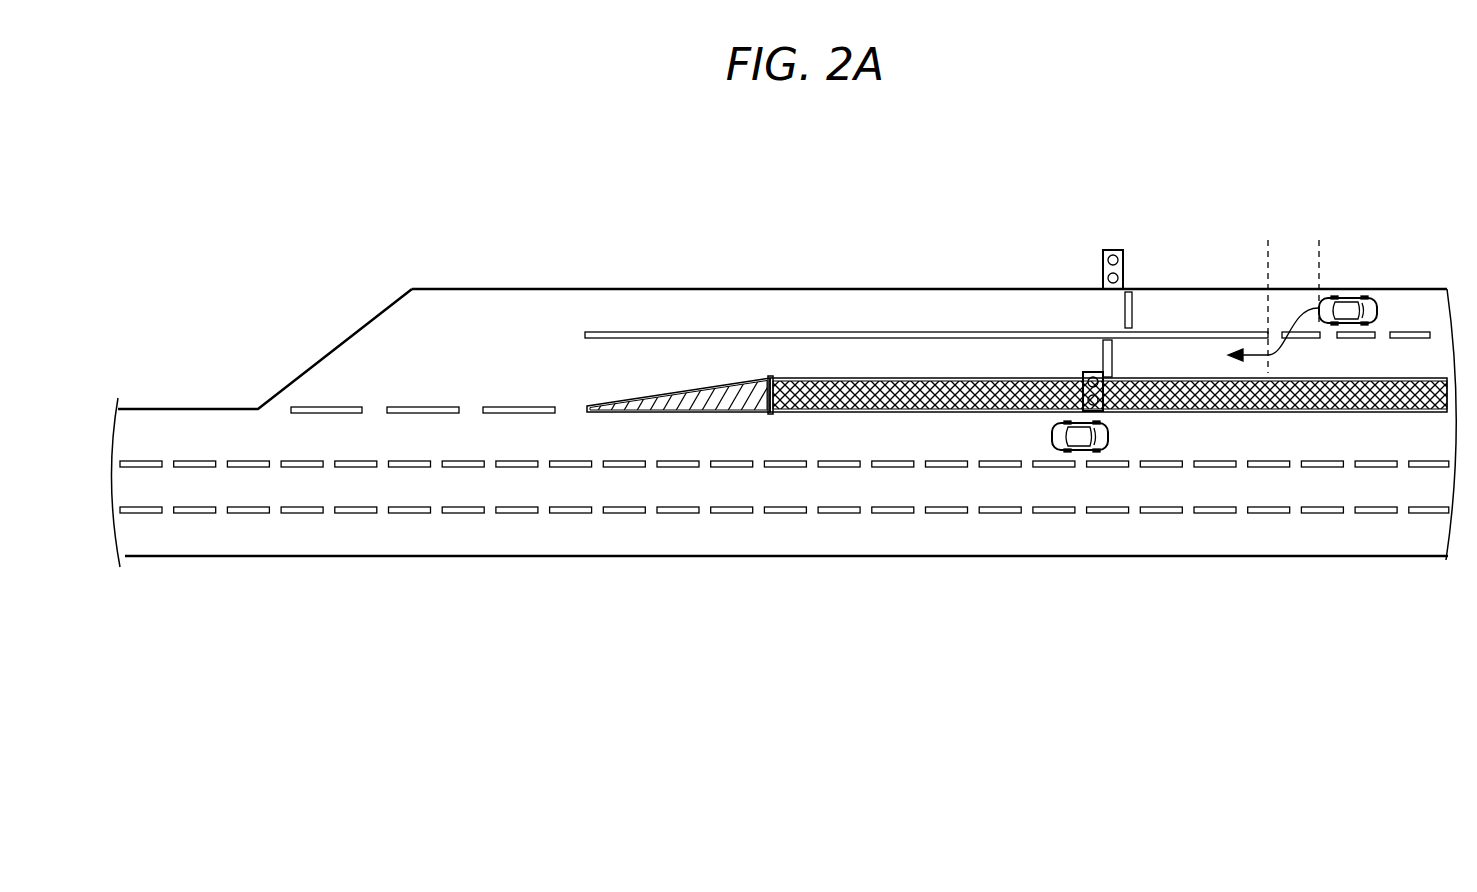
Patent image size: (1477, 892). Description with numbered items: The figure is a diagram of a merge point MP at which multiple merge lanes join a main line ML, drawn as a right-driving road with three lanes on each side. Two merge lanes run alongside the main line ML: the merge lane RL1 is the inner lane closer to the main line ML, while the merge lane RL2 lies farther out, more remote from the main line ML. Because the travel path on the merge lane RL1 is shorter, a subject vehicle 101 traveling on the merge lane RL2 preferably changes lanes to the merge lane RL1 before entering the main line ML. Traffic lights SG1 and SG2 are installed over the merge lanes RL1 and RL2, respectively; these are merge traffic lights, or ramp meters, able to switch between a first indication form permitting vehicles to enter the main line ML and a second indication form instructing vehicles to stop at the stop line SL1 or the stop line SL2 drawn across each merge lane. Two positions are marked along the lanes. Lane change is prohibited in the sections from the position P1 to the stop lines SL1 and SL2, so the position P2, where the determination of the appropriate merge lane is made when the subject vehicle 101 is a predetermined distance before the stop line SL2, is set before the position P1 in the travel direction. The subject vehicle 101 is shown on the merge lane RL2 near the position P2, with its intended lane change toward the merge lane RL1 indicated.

The merge point MP is at (258, 407).
The merge lane RL1 is at (836, 348).
The merge lane RL2 is at (932, 308).
The traffic light SG1 is at (1093, 372).
The traffic light SG2 is at (1113, 250).
The stop line SL1 is at (1112, 355).
The stop line SL2 is at (1132, 308).
The position P1 is at (1268, 294).
The position P2 is at (1319, 269).
The subject vehicle 101 is at (1352, 298).
The main line ML is at (1296, 487).